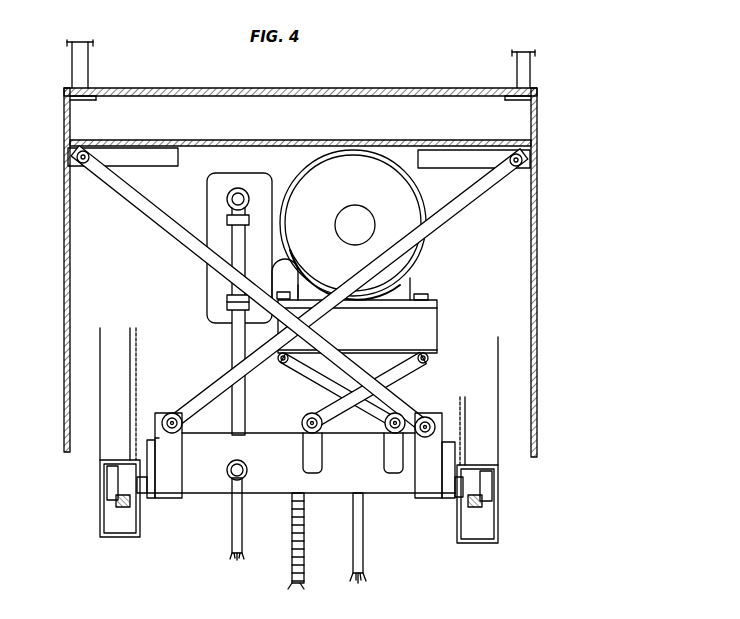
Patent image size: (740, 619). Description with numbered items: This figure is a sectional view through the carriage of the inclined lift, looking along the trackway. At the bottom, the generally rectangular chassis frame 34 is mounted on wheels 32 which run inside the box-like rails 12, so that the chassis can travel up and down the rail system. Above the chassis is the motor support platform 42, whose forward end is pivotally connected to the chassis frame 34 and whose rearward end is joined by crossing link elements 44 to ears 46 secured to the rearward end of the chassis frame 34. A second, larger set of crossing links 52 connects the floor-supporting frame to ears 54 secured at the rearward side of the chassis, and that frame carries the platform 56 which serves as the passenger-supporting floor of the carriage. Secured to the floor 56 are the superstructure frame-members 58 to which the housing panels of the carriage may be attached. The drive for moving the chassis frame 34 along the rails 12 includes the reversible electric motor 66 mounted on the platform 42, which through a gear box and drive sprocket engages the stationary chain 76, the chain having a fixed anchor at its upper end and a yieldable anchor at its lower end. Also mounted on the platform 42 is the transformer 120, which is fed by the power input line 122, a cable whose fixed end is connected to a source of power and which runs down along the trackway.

The box-like rails 12 is at (92, 529).
The wheels 32 is at (118, 503).
The chassis frame 34 is at (215, 493).
The motor support platform 42 is at (408, 352).
The crossing link elements 44 is at (429, 362).
The ears 46 is at (384, 460).
The crossing links 52 is at (476, 202).
The ears 54 is at (161, 413).
The platform 56 is at (396, 72).
The superstructure frame-members 58 is at (86, 73).
The reversible electric motor 66 is at (392, 172).
The stationary chain 76 is at (291, 576).
The transformer 120 is at (270, 173).
The power input line 122 is at (232, 340).